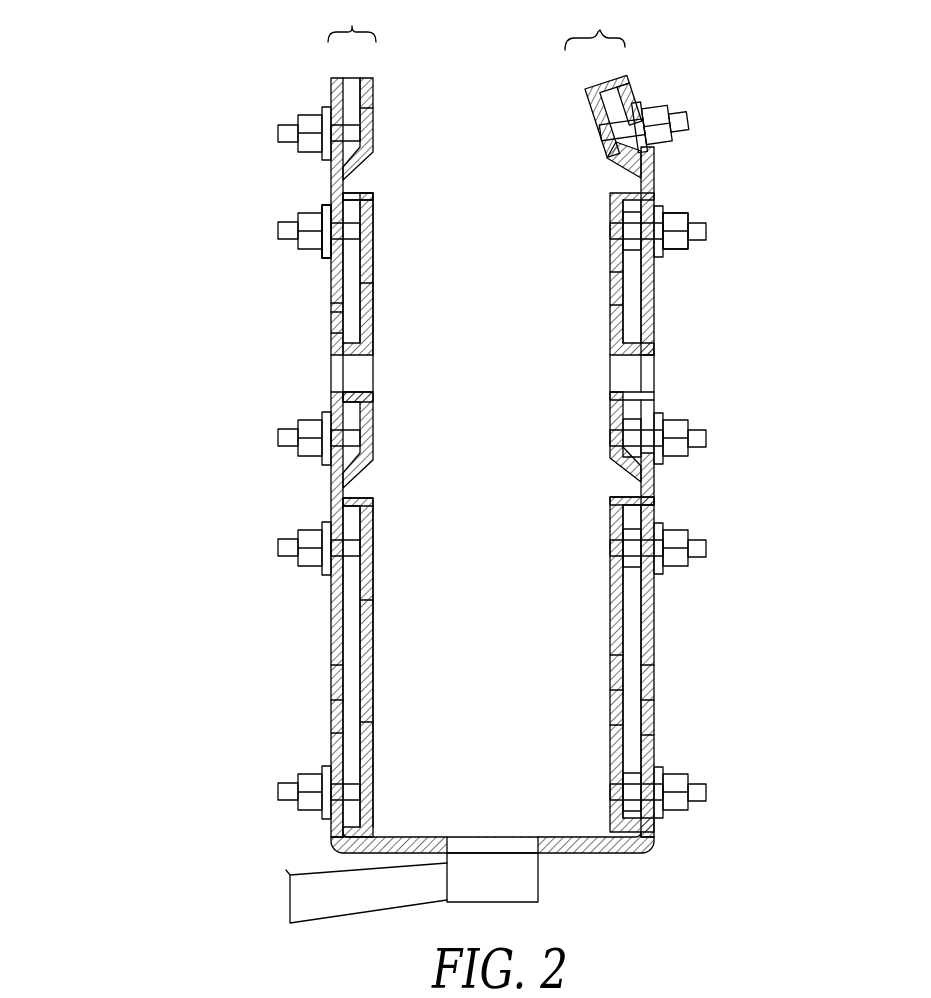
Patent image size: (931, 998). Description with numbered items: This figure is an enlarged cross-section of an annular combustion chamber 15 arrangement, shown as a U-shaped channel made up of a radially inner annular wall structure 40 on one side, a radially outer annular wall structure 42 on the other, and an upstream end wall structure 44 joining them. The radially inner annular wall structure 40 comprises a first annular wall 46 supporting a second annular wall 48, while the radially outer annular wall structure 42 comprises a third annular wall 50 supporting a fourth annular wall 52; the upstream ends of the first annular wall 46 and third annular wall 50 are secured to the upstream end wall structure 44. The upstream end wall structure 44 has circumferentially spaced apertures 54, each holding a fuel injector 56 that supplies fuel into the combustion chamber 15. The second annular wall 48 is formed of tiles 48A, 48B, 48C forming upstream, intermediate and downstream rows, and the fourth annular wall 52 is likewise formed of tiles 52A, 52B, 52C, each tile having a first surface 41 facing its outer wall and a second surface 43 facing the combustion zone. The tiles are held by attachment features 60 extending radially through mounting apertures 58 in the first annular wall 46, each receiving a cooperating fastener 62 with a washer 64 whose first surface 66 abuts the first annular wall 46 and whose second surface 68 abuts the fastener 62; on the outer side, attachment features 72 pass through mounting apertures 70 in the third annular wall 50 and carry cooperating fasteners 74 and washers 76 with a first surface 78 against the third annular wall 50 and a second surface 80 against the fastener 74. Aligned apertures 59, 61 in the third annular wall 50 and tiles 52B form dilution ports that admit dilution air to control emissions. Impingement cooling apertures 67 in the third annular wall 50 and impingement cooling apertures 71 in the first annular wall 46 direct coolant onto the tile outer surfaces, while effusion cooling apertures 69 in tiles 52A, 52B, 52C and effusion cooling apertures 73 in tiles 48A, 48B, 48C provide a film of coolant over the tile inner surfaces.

The annular combustion chamber 15 is at (206, 243).
The radially inner annular wall structure 40 is at (595, 26).
The first surface 41 is at (355, 95).
The radially outer annular wall structure 42 is at (352, 22).
The second surface 43 is at (374, 136).
The upstream end wall structure 44 is at (600, 856).
The first annular wall 46 is at (655, 300).
The second annular wall 48 is at (612, 258).
The tile 48A is at (612, 745).
The tile 48B is at (612, 212).
The tile 48C is at (591, 100).
The third annular wall 50 is at (332, 272).
The fourth annular wall 52 is at (375, 322).
The tile 52A is at (375, 650).
The tile 52B is at (375, 236).
The tile 52C is at (372, 92).
The aperture 54 is at (448, 840).
The fuel injector 56 is at (491, 902).
The mounting aperture 58 is at (646, 165).
The aperture 59 is at (335, 372).
The attachment feature 60 is at (689, 122).
The aperture 61 is at (362, 372).
The cooperating fastener 62 is at (660, 115).
The washer 64 is at (640, 103).
The first surface 66 is at (622, 243).
The impingement cooling aperture 67 is at (334, 333).
The second surface 68 is at (665, 250).
The effusion cooling aperture 69 is at (374, 108).
The mounting aperture 70 is at (375, 262).
The impingement cooling aperture 71 is at (655, 735).
The attachment feature 72 is at (280, 132).
The effusion cooling aperture 73 is at (590, 119).
The cooperating fastener 74 is at (304, 118).
The washer 76 is at (327, 108).
The first surface 78 is at (323, 248).
The second surface 80 is at (337, 198).